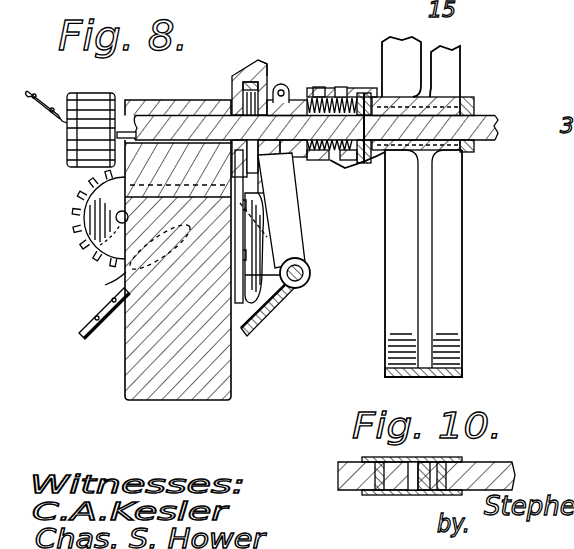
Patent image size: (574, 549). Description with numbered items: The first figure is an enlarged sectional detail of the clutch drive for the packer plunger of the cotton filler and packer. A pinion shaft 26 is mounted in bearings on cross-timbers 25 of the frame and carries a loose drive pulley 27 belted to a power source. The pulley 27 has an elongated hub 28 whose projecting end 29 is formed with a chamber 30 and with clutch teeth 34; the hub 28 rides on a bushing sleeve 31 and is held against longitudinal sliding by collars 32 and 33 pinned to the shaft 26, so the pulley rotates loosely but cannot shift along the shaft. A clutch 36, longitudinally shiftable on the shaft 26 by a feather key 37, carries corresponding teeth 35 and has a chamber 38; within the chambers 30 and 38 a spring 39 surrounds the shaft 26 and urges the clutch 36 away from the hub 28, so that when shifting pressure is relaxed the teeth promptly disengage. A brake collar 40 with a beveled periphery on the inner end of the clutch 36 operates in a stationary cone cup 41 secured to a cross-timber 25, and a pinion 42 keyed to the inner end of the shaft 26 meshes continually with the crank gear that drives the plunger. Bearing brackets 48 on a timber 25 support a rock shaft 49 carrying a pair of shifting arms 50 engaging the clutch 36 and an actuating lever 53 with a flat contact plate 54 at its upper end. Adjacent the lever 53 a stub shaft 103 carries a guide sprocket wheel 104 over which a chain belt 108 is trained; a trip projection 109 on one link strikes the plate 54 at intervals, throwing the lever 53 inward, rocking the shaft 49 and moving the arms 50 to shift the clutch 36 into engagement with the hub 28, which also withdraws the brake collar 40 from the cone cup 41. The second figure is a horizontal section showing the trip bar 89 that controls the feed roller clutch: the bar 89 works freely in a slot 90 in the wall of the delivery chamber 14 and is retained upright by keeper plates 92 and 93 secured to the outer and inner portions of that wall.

In FIG. 10, the delivery chamber 14 is at (508, 470).
In FIG. 8, the cross-timbers 25 is at (143, 100).
In FIG. 8, the pinion shaft 26 is at (474, 110).
In FIG. 8, the drive pulley 27 is at (452, 208).
In FIG. 8, the hub 28 is at (434, 100).
In FIG. 8, the projecting end 29 is at (374, 160).
In FIG. 8, the chamber 30 is at (340, 92).
In FIG. 8, the bushing sleeve 31 is at (457, 152).
In FIG. 8, the collar 32 is at (356, 160).
In FIG. 8, the collar 33 is at (476, 145).
In FIG. 8, the clutch teeth 34 is at (333, 160).
In FIG. 8, the clutch teeth 35 is at (326, 98).
In FIG. 8, the clutch 36 is at (274, 93).
In FIG. 8, the feather key 37 is at (250, 210).
In FIG. 8, the chamber 38 is at (311, 98).
In FIG. 8, the spring 39 is at (359, 96).
In FIG. 8, the brake collar 40 is at (265, 75).
In FIG. 8, the cone cup 41 is at (248, 72).
In FIG. 8, the pinion 42 is at (80, 93).
In FIG. 8, the bearing brackets 48 is at (272, 302).
In FIG. 8, the rock shaft 49 is at (311, 276).
In FIG. 8, the shifting arms 50 is at (299, 241).
In FIG. 8, the actuating lever 53 is at (268, 244).
In FIG. 8, the contact plate 54 is at (190, 100).
In FIG. 10, the trip bar 89 is at (366, 464).
In FIG. 10, the slot 90 is at (424, 492).
In FIG. 10, the keeper plate 92 is at (424, 462).
In FIG. 10, the keeper plate 93 is at (379, 491).
In FIG. 8, the stub shaft 103 is at (118, 244).
In FIG. 8, the guide sprocket wheel 104 is at (80, 219).
In FIG. 8, the chain belt 108 is at (55, 120).
In FIG. 8, the trip projection 109 is at (118, 290).